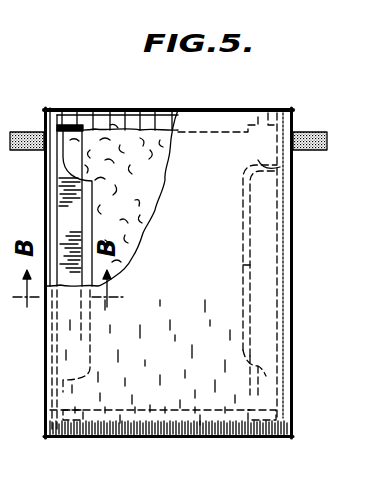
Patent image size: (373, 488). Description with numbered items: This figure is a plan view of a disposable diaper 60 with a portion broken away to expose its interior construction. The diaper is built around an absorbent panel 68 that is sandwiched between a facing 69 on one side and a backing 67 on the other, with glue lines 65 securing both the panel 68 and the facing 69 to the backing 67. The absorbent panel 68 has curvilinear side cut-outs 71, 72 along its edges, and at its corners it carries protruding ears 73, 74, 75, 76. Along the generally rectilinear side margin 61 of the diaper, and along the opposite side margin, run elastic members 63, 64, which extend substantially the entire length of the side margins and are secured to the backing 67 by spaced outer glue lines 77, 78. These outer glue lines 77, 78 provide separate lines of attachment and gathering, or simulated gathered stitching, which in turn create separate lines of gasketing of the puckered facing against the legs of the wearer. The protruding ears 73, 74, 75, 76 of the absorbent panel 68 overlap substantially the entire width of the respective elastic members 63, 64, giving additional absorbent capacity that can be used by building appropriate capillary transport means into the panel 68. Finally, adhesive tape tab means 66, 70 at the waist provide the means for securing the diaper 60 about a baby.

The disposable diaper 60 is at (243, 86).
The diaper side margin 61 is at (292, 300).
The elastic member 63 is at (65, 188).
The elastic member 64 is at (270, 217).
The glue lines 65 is at (55, 111).
The adhesive tape tab means 66 is at (13, 132).
The backing 67 is at (47, 215).
The absorbent panel 68 is at (153, 189).
The facing 69 is at (165, 309).
The adhesive tape tab means 70 is at (300, 132).
The curvilinear side cut-out 71 is at (241, 270).
The curvilinear side cut-out 72 is at (85, 203).
The protruding ear 73 is at (70, 402).
The protruding ear 74 is at (73, 152).
The protruding ear 75 is at (281, 167).
The protruding ear 76 is at (266, 387).
The outer glue lines 77 is at (72, 123).
The outer glue lines 78 is at (253, 112).